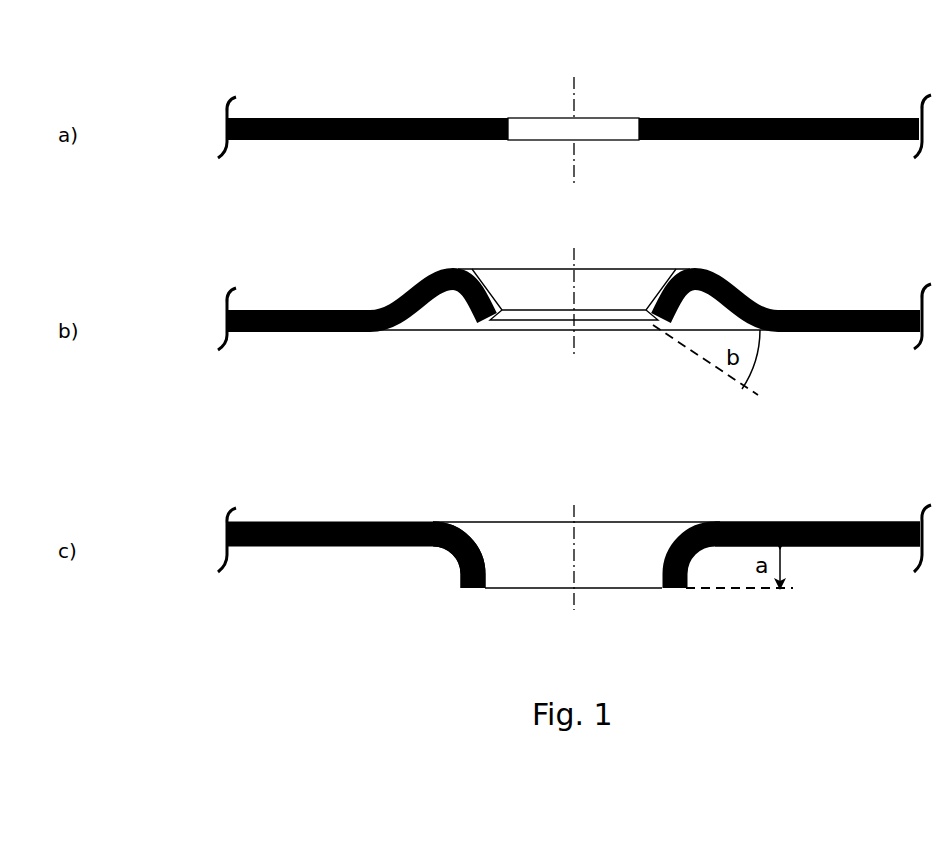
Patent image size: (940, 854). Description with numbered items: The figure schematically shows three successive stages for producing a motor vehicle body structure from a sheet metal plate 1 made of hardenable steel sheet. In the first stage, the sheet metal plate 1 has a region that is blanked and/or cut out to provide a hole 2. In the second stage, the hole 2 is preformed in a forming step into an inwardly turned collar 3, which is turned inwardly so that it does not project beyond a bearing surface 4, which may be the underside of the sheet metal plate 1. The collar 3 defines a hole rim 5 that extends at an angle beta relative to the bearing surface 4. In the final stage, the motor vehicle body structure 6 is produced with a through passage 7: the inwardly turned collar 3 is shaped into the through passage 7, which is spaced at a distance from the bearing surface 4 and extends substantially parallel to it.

The sheet metal plate 1 is at (300, 96).
The hole 2 is at (537, 130).
The collar 3 is at (685, 270).
The bearing surface 4 is at (833, 333).
The hole rim 5 is at (647, 318).
The motor vehicle body structure 6 is at (345, 511).
The through passage 7 is at (477, 547).